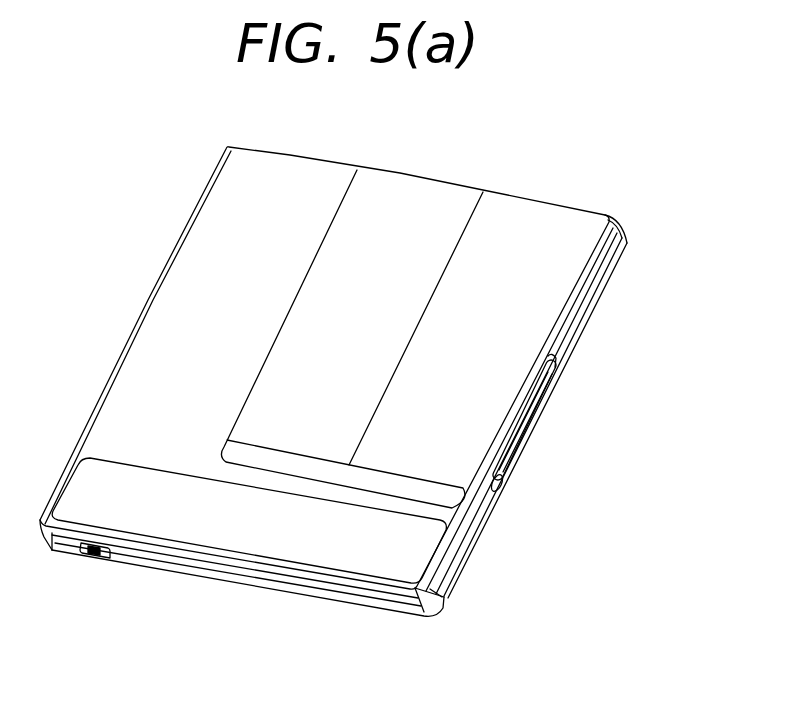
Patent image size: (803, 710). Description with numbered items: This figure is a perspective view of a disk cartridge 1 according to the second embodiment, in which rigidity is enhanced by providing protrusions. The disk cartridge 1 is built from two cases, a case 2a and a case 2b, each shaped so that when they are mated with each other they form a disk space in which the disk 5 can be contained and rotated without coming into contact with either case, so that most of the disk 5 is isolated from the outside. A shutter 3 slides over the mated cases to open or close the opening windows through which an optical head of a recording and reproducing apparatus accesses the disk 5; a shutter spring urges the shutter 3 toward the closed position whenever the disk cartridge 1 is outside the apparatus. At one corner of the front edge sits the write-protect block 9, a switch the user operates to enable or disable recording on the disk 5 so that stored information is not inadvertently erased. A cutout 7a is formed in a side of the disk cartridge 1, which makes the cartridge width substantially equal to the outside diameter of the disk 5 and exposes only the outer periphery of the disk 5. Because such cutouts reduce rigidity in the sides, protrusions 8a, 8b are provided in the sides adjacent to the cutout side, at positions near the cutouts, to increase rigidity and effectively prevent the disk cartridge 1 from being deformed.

The disk cartridge 1 is at (366, 374).
The case 2a is at (602, 250).
The case 2b is at (598, 286).
The shutter 3 is at (414, 186).
The disk 5 is at (535, 418).
The cutout 7a is at (505, 477).
The protrusion 8a is at (578, 343).
The protrusion 8b is at (130, 331).
The write-protect block 9 is at (93, 553).